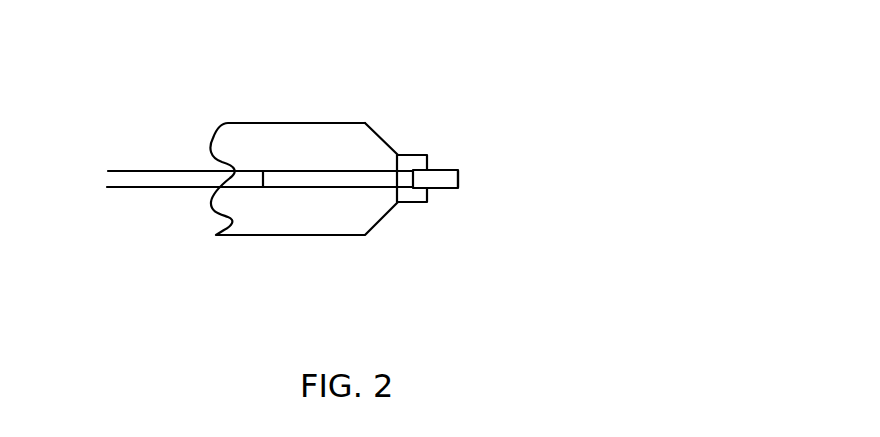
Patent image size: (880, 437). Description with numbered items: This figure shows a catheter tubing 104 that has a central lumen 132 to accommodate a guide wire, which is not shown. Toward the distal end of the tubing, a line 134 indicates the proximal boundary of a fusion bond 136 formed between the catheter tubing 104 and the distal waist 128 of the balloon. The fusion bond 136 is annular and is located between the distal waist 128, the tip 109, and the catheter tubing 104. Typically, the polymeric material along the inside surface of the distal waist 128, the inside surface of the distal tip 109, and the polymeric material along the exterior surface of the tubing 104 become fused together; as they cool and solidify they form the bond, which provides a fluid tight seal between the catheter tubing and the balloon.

The catheter tubing 104 is at (180, 187).
The tip 109 is at (458, 177).
The distal waist 128 is at (413, 202).
The central lumen 132 is at (317, 187).
The line 134 is at (405, 155).
The fusion bond 136 is at (443, 168).